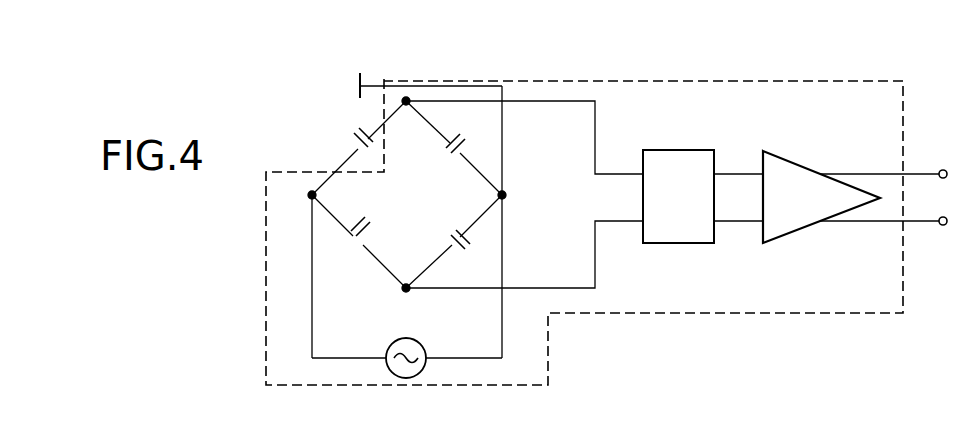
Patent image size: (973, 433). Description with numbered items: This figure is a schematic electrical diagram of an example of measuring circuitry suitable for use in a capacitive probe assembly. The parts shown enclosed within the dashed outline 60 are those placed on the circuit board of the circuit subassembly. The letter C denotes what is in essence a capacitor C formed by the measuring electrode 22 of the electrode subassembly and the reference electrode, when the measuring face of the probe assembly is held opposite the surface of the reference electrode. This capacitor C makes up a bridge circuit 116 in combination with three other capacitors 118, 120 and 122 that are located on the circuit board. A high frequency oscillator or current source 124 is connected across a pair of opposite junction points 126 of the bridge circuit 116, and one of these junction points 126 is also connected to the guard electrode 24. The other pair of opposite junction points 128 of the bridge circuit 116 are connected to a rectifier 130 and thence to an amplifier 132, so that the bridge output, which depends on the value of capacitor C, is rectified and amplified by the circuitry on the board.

The dashed outline 60 is at (768, 81).
The guard electrode 24 is at (357, 85).
The measuring electrode 22 is at (351, 136).
The capacitor C is at (353, 146).
The bridge circuit 116 is at (473, 152).
The capacitor 122 is at (455, 152).
The capacitor 118 is at (360, 230).
The capacitor 120 is at (455, 237).
The high frequency oscillator 124 is at (424, 345).
The junction points 126 is at (309, 197).
The junction points 128 is at (406, 106).
The rectifier 130 is at (676, 149).
The amplifier 132 is at (816, 170).